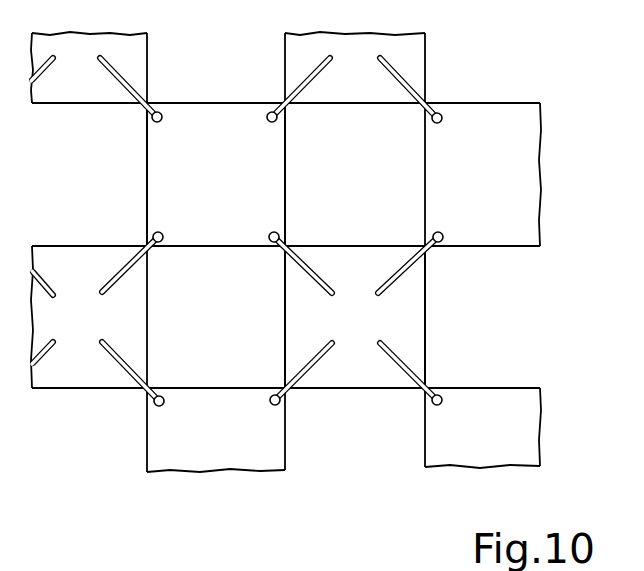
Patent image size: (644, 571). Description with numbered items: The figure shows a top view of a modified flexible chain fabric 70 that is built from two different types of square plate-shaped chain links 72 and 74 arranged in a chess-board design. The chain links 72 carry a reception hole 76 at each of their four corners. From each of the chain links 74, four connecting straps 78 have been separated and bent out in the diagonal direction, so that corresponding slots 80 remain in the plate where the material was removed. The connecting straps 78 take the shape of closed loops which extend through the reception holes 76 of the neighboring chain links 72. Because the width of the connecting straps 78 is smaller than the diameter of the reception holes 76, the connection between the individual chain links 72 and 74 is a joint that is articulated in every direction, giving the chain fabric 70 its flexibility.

The chain fabric 70 is at (130, 403).
The chain link 72 is at (218, 225).
The chain link 74 is at (360, 272).
The reception hole 76 is at (270, 232).
The connecting strap 78 is at (290, 257).
The slot 80 is at (396, 278).